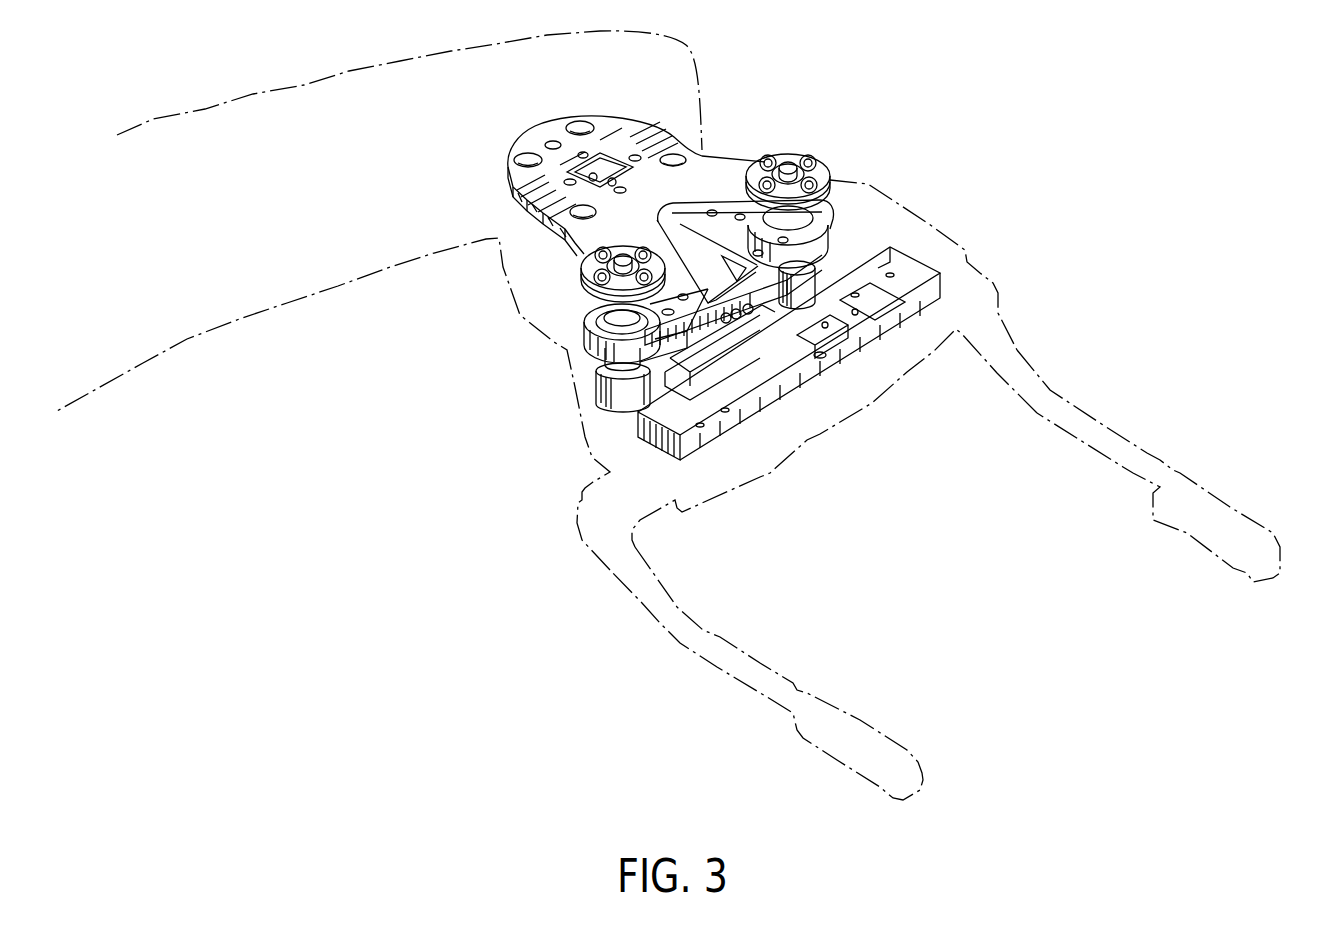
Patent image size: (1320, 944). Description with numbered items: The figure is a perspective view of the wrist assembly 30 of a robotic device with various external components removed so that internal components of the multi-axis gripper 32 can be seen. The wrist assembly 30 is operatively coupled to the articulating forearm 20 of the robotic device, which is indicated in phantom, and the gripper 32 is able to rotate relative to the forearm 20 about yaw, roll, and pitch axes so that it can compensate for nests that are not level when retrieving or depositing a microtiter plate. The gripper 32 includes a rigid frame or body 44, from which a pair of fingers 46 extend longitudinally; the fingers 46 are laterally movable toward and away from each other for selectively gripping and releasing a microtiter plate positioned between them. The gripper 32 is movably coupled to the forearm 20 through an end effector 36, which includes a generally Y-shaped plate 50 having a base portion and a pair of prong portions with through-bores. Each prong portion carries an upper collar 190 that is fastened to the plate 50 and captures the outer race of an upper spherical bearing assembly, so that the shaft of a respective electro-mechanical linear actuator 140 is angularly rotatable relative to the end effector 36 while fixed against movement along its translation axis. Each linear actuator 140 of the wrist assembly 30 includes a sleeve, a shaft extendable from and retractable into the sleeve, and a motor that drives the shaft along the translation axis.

The articulating forearm 20 is at (279, 89).
The wrist assembly 30 is at (894, 104).
The multi-axis gripper 32 is at (935, 226).
The end effector 36 is at (712, 137).
The body 44 is at (671, 453).
The fingers 46 is at (1118, 432).
The Y-shaped plate 50 is at (749, 151).
The linear actuators 140 is at (824, 277).
The upper collars 190 is at (790, 158).